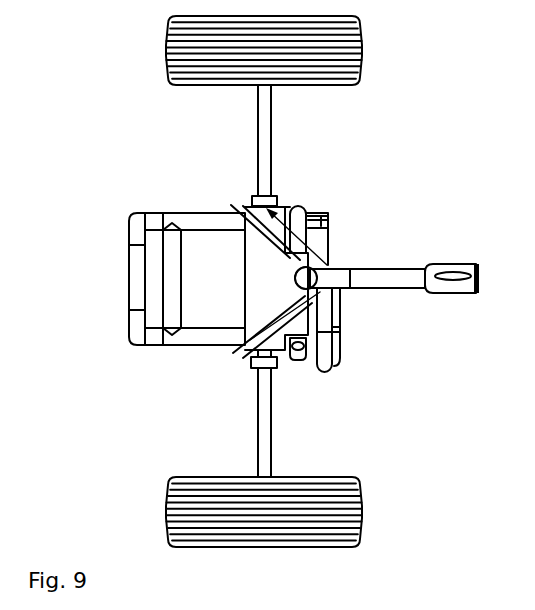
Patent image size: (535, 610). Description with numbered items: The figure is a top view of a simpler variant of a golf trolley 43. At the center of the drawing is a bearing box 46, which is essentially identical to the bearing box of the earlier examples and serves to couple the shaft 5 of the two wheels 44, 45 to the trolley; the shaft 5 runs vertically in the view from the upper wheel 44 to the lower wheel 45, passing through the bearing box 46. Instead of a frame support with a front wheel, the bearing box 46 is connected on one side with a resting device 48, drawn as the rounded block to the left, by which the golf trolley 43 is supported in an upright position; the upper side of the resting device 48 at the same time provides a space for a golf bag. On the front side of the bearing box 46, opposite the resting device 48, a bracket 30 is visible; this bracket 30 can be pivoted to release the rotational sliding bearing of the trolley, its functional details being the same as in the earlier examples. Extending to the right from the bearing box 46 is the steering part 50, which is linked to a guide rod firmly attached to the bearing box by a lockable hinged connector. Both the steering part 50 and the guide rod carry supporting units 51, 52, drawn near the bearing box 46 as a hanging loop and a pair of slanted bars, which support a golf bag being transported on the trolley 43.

The shaft 5 is at (263, 136).
The bracket 30 is at (328, 222).
The golf trolley 43 is at (406, 149).
The wheel 44 is at (362, 34).
The wheel 45 is at (343, 507).
The bearing box 46 is at (263, 265).
The resting device 48 is at (170, 297).
The steering part 50 is at (383, 276).
The supporting unit 51 is at (335, 362).
The supporting unit 52 is at (253, 343).